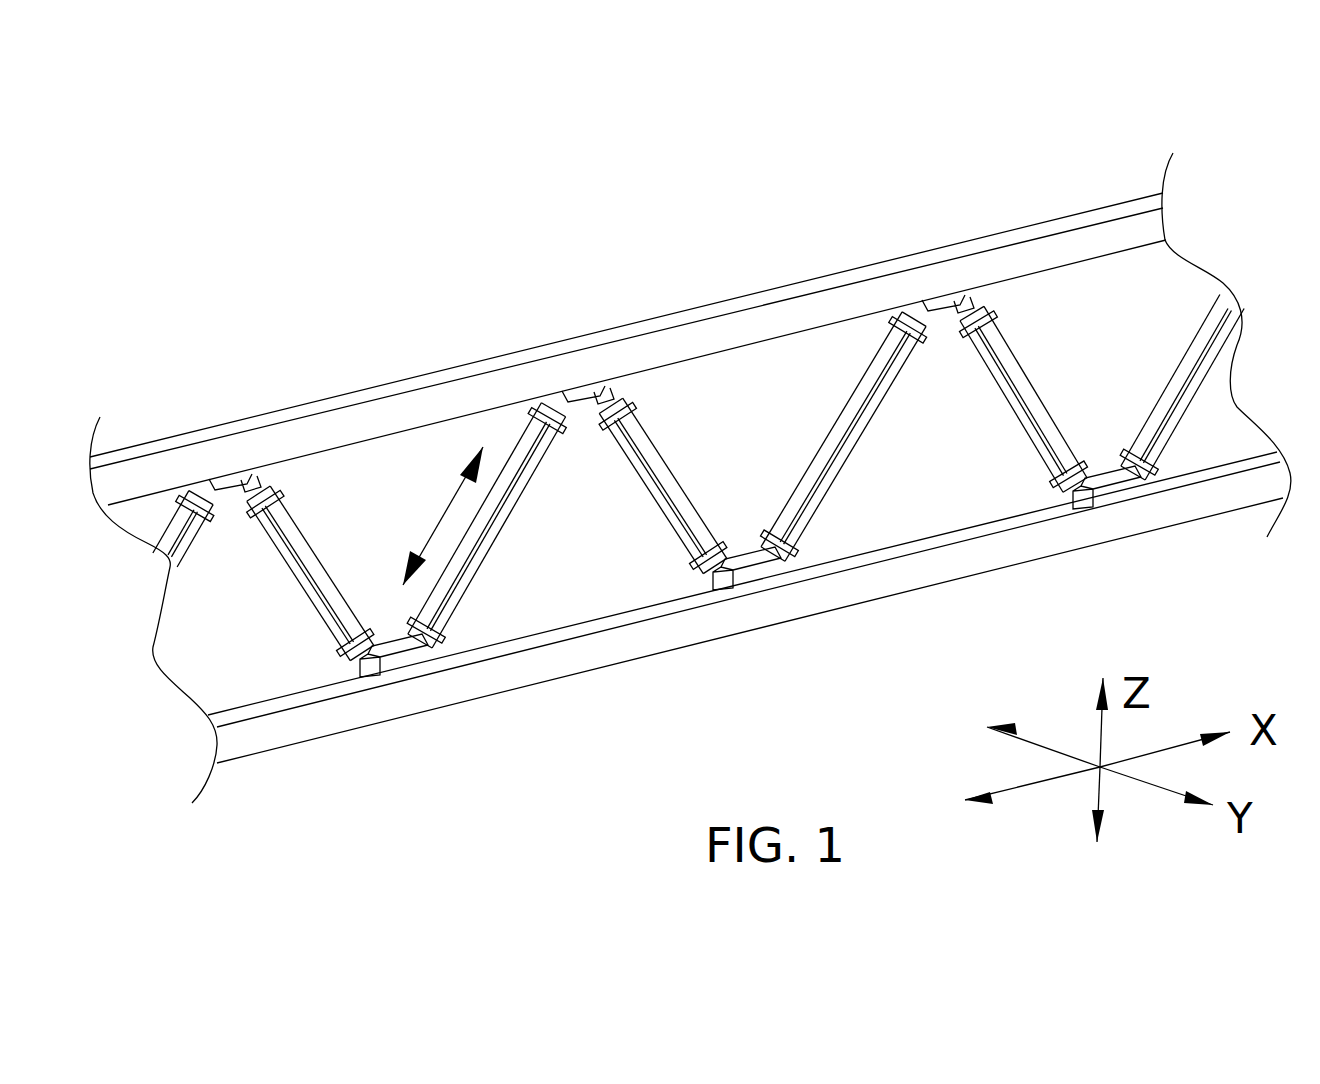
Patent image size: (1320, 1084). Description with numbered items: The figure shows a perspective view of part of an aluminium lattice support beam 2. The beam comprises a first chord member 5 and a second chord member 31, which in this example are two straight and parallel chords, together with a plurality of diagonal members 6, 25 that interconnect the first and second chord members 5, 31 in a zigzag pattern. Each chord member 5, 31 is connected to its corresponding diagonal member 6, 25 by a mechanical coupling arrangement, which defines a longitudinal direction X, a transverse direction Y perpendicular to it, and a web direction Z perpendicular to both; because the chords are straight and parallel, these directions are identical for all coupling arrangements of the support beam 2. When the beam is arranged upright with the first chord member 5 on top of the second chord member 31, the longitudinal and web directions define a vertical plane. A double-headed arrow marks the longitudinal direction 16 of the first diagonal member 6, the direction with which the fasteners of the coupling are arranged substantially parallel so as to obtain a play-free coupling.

The lattice support beam 2 is at (500, 181).
The first chord member 5 is at (836, 305).
The second chord member 31 is at (686, 628).
The first diagonal member 6 is at (488, 547).
The diagonal member 25 is at (655, 455).
The longitudinal direction of the first diagonal member 16 is at (440, 517).